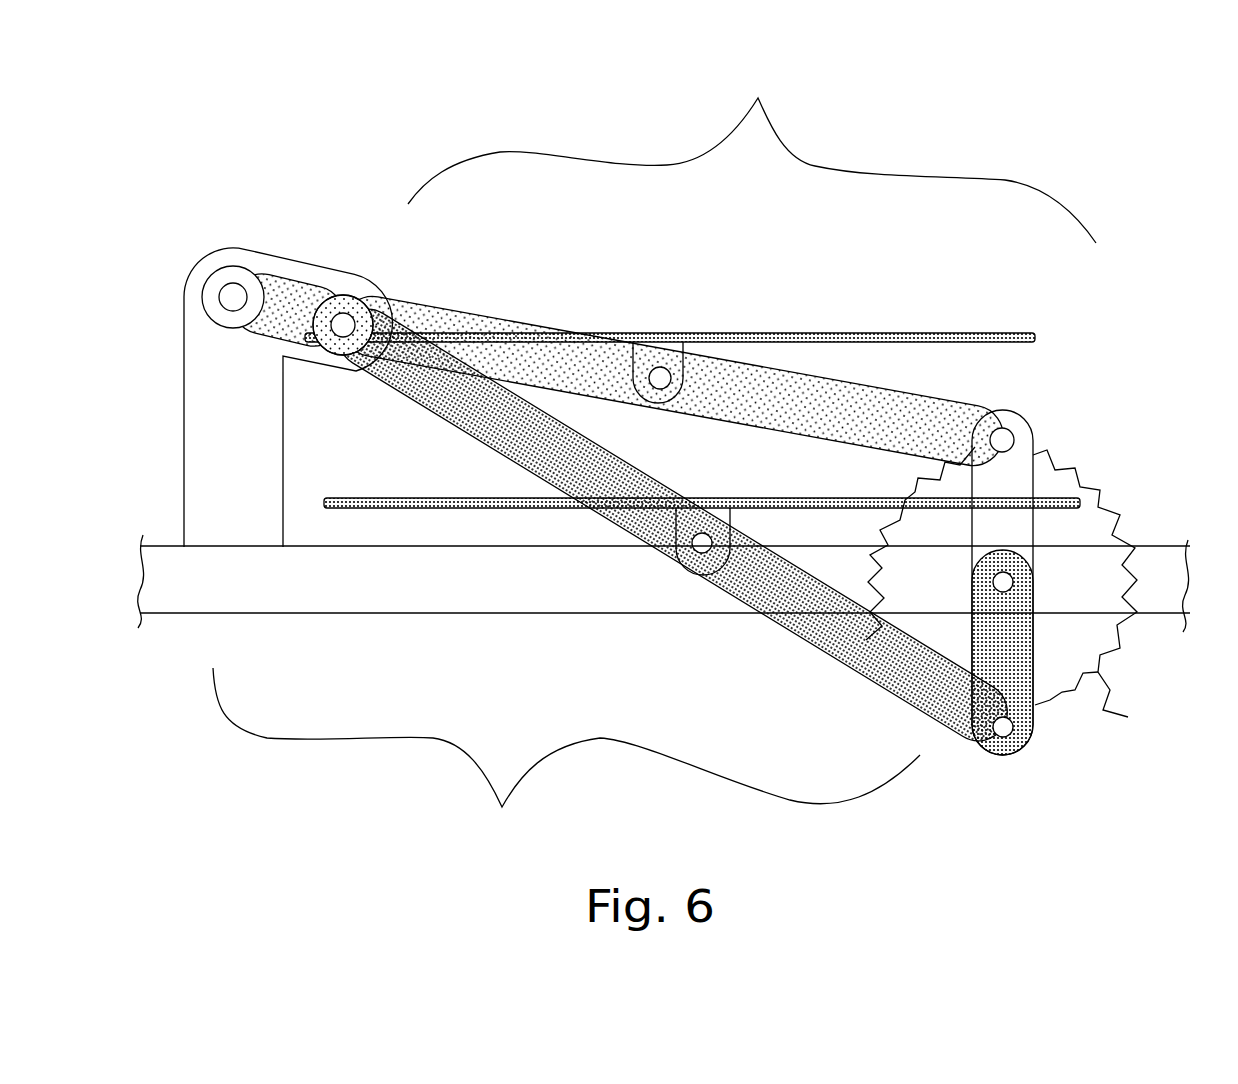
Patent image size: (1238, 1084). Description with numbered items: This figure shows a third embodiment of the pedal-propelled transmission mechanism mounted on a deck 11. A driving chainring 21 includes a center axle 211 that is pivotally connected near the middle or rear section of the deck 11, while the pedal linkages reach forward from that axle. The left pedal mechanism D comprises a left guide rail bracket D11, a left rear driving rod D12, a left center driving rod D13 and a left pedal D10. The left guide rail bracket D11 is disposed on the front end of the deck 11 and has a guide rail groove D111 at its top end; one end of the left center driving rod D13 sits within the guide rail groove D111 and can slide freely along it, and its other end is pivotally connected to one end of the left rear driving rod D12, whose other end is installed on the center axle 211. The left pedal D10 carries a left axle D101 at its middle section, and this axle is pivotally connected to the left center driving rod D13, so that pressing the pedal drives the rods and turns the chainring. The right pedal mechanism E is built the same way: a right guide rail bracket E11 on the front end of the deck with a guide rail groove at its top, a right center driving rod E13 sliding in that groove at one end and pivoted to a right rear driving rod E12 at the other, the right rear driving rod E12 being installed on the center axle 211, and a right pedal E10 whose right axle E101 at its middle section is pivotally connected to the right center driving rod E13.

The right pedal mechanism E is at (752, 151).
The left pedal mechanism D is at (566, 753).
The right guide rail bracket E11 is at (385, 272).
The right axle E101 is at (660, 366).
The right center driving rod E13 is at (887, 372).
The right pedal E10 is at (1018, 330).
The right rear driving rod E12 is at (1033, 422).
The center axle 211 is at (1013, 582).
The driving chainring 21 is at (1128, 717).
The deck 11 is at (165, 583).
The left guide rail bracket D11 is at (258, 525).
The guide rail groove D111 is at (305, 278).
The left pedal D10 is at (478, 507).
The left axle D101 is at (690, 570).
The left center driving rod D13 is at (812, 640).
The left rear driving rod D12 is at (984, 643).